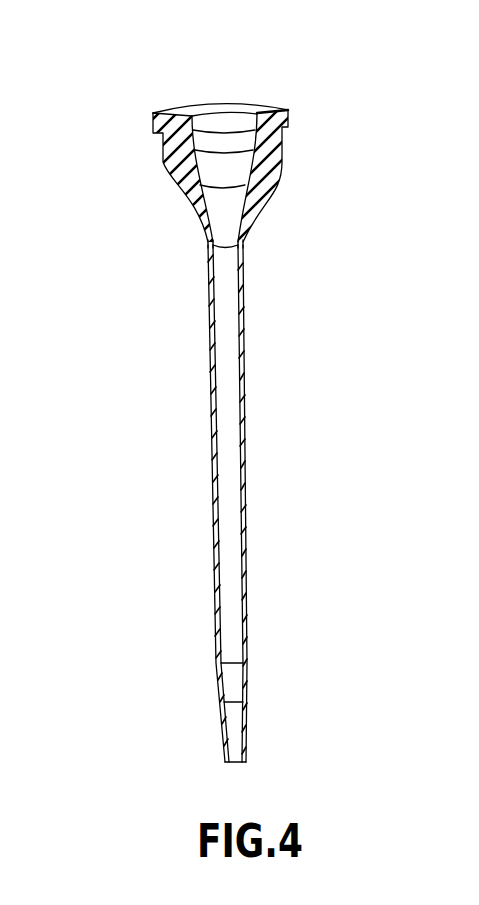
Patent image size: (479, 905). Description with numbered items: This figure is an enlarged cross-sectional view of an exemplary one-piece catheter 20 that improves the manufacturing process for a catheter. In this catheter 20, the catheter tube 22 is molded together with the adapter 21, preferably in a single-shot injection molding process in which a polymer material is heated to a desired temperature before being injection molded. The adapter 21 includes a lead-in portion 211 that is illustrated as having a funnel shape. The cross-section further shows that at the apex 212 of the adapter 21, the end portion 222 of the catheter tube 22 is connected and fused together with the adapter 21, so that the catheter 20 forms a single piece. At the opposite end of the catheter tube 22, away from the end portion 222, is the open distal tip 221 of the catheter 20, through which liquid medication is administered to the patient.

The catheter 20 is at (420, 195).
The adapter 21 is at (260, 108).
The lead-in portion 211 is at (182, 202).
The apex 212 is at (243, 247).
The catheter tube 22 is at (247, 453).
The end portion 222 is at (245, 273).
The open distal tip 221 is at (247, 712).